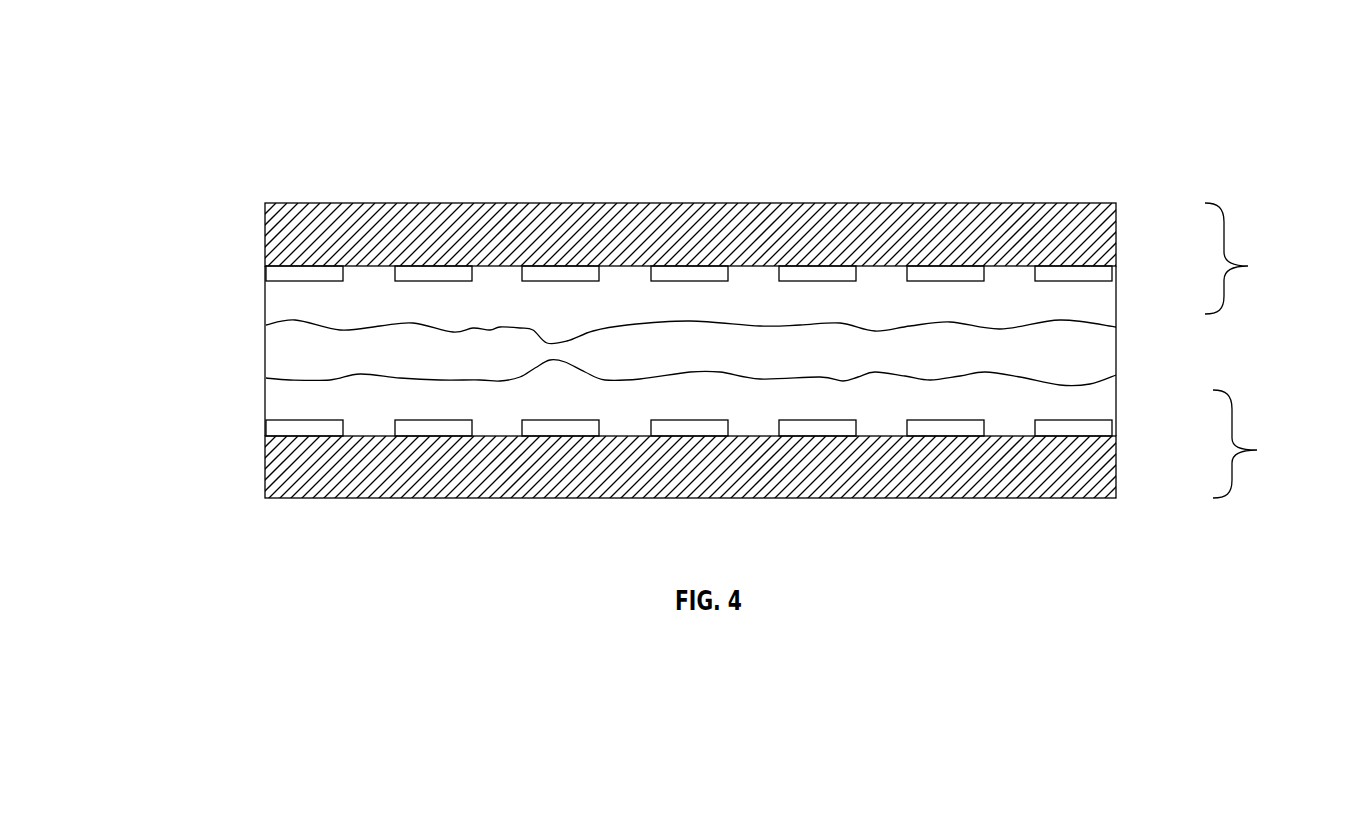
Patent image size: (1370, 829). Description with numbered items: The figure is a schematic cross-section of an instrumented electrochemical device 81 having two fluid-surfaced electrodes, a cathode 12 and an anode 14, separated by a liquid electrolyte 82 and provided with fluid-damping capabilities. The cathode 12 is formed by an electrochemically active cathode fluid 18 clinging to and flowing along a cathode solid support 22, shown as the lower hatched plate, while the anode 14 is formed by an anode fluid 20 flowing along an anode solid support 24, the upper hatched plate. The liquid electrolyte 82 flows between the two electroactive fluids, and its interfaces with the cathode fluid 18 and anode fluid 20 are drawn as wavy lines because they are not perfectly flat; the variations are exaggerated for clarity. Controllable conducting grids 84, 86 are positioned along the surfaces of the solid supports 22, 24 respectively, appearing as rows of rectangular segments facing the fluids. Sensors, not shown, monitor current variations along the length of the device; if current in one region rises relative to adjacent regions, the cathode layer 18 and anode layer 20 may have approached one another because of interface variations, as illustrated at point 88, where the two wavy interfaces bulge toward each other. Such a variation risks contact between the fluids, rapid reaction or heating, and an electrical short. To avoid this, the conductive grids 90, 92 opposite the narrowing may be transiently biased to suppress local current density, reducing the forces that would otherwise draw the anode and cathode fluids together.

The instrumented electrochemical device 81 is at (683, 109).
The anode solid support 24 is at (282, 229).
The controllable conducting grid 86 is at (308, 273).
The conductive grid 92 is at (563, 273).
The anode fluid 20 is at (763, 305).
The liquid electrolyte 82 is at (283, 351).
The point of approach 88 is at (565, 331).
The cathode solid support 22 is at (283, 467).
The controllable conducting grid 84 is at (437, 428).
The conductive grid 90 is at (563, 428).
The cathode fluid 18 is at (883, 412).
The anode 14 is at (1265, 258).
The cathode 12 is at (1272, 444).